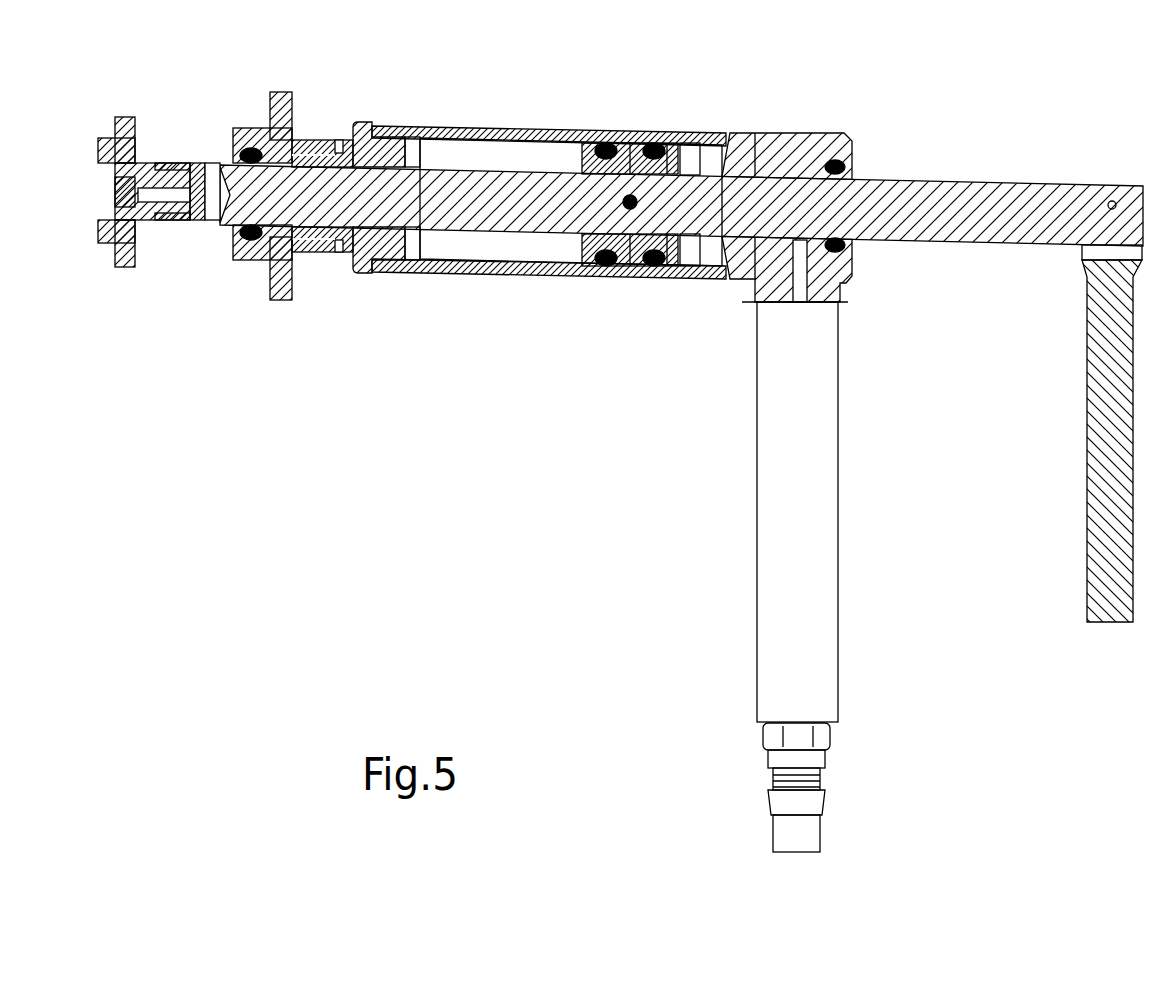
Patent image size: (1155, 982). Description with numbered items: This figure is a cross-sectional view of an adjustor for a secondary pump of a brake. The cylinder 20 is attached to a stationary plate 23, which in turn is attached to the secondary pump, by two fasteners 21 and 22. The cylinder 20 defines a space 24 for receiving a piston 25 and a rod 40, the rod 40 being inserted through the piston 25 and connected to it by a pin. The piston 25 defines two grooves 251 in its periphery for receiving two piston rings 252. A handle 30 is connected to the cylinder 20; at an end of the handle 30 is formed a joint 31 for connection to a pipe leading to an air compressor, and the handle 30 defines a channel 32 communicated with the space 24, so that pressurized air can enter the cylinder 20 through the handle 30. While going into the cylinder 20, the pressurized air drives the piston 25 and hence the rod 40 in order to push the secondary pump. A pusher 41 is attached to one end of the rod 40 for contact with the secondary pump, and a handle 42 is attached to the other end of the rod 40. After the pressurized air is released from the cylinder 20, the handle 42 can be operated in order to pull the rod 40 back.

The cylinder 20 is at (538, 120).
The fastener 21 is at (360, 124).
The fastener 22 is at (243, 128).
The stationary plate 23 is at (290, 118).
The space 24 is at (493, 250).
The piston 25 is at (635, 251).
The groove 251 is at (585, 264).
The piston ring 252 is at (618, 272).
The handle 30 is at (822, 186).
The joint 31 is at (798, 837).
The channel 32 is at (797, 280).
The rod 40 is at (978, 176).
The pusher 41 is at (127, 117).
The handle 42 is at (1107, 560).